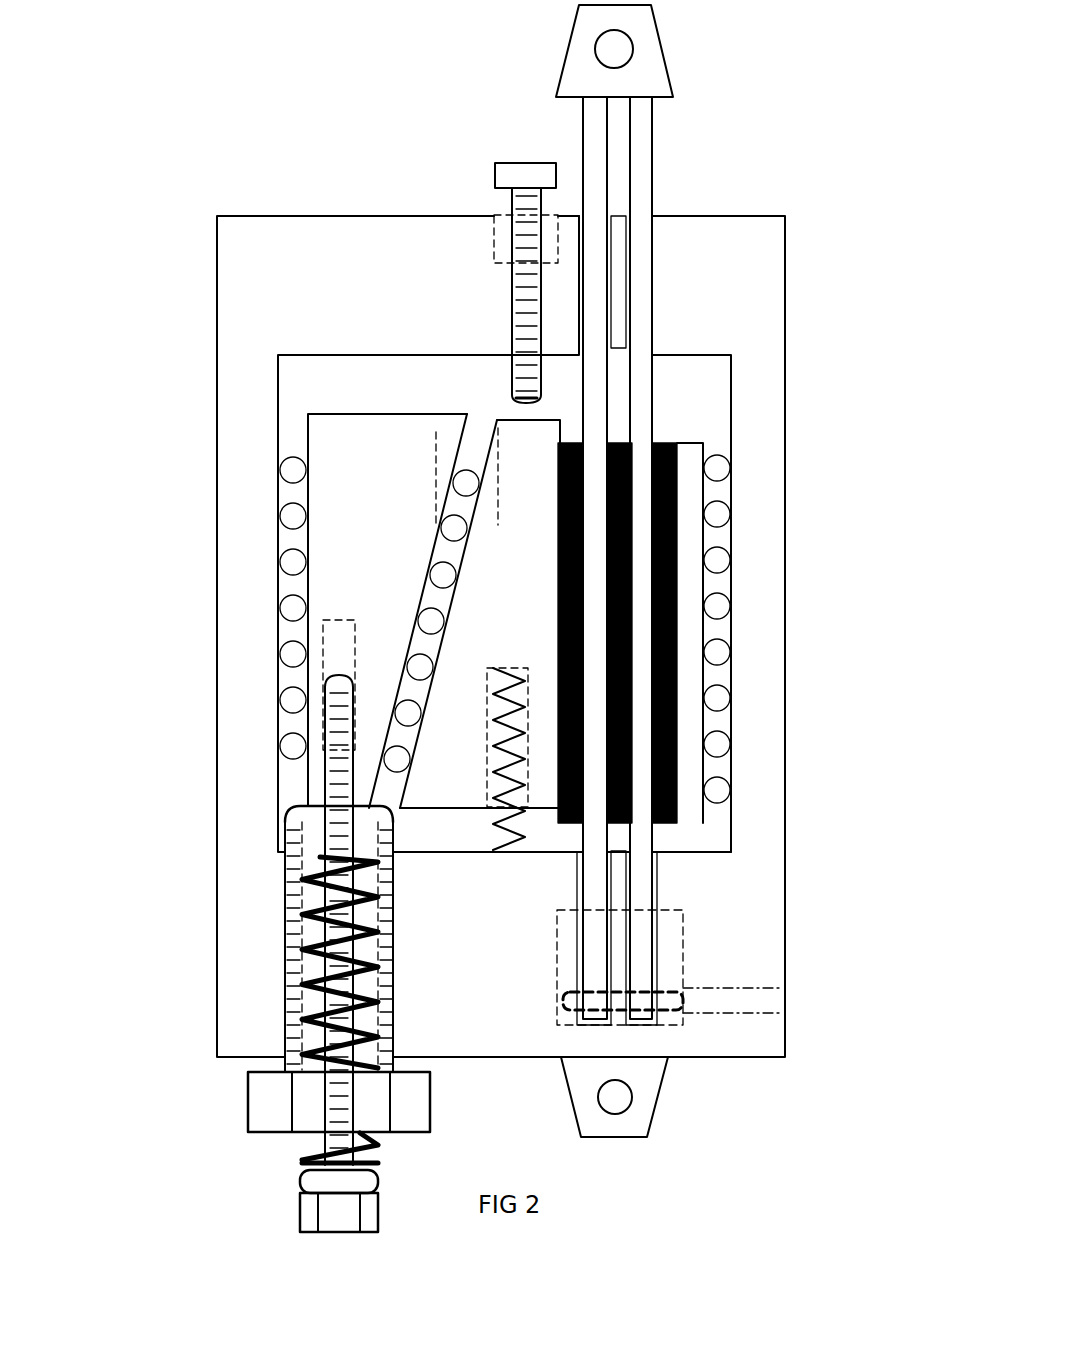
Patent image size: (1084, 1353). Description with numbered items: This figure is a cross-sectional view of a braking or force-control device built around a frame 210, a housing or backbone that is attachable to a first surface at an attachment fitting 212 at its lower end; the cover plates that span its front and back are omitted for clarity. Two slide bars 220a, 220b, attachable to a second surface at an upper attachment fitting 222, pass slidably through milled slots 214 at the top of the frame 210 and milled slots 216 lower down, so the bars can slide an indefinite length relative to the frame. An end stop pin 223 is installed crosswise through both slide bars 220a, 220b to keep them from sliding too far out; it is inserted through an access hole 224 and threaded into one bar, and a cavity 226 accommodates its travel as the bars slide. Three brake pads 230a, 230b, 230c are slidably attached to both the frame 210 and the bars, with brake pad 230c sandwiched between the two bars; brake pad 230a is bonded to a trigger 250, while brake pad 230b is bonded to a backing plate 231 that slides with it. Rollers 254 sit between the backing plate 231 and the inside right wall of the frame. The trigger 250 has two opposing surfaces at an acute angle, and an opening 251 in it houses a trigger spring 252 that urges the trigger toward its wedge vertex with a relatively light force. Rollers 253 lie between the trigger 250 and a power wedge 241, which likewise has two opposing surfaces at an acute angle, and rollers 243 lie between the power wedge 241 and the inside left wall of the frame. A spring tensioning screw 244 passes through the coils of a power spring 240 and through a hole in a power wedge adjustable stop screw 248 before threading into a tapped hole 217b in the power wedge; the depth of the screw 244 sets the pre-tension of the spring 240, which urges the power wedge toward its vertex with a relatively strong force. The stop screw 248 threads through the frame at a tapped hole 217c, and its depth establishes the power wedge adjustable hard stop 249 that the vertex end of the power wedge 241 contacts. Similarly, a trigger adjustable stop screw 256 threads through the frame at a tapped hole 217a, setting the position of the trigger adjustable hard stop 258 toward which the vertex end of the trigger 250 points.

The frame 210 is at (712, 288).
The attachment fitting 212 is at (615, 1097).
The milled slots 214 is at (652, 243).
The milled slots 216 is at (656, 868).
The tapped hole 217a is at (510, 305).
The tapped hole 217b is at (323, 640).
The tapped hole 217c is at (285, 917).
The slide bar 220a is at (598, 120).
The slide bar 220b is at (643, 168).
The attachment fitting 222 is at (614, 49).
The end stop pin 223 is at (668, 1000).
The access hole 224 is at (745, 985).
The cavity 226 is at (683, 943).
The brake pad 230a is at (590, 583).
The brake pad 230b is at (677, 643).
The brake pad 230c is at (632, 697).
The backing plate 231 is at (690, 530).
The power spring 240 is at (285, 1027).
The power wedge 241 is at (355, 440).
The rollers 243 is at (293, 562).
The spring tensioning screw 244 is at (338, 1213).
The power wedge adjustable stop screw 248 is at (268, 1092).
The power wedge adjustable hard stop 249 is at (290, 808).
The trigger 250 is at (458, 675).
The opening 251 is at (485, 700).
The trigger spring 252 is at (510, 750).
The rollers 253 is at (427, 620).
The rollers 254 is at (717, 468).
The trigger adjustable stop screw 256 is at (525, 175).
The trigger adjustable hard stop 258 is at (515, 402).